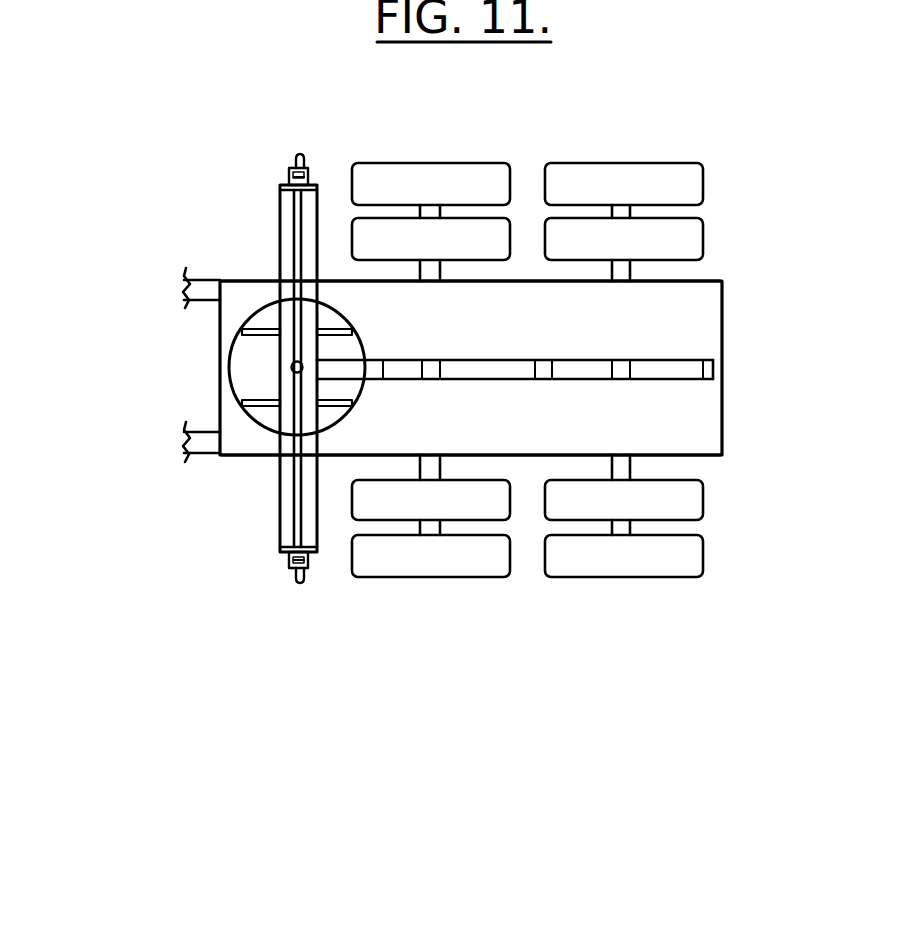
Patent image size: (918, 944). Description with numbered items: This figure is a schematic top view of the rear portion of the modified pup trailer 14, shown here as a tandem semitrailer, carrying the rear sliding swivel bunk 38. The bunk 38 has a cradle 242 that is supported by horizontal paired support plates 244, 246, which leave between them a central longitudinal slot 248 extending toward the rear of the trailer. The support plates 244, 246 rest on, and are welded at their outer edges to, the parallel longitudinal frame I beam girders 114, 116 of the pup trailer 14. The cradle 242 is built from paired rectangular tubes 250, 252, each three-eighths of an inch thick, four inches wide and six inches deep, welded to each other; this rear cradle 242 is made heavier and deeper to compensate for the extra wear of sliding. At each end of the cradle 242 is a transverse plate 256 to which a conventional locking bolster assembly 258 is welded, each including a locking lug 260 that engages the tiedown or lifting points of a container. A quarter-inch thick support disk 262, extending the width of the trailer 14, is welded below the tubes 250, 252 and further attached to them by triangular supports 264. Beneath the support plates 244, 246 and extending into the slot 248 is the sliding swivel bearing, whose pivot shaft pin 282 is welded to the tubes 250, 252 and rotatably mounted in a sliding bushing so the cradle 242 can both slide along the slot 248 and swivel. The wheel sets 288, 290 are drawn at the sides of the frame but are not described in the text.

The pup trailer 14 is at (498, 127).
The rear sliding swivel bunk 38 is at (207, 339).
The longitudinal frame I beam girder 114 is at (213, 280).
The longitudinal frame I beam girder 116 is at (212, 455).
The cradle 242 is at (280, 355).
The support plate 244 is at (695, 315).
The support plate 246 is at (695, 420).
The central longitudinal slot 248 is at (692, 366).
The rectangular tube 250 is at (282, 513).
The rectangular tube 252 is at (308, 527).
The transverse plate 256 is at (283, 186).
The locking bolster assembly 258 is at (294, 158).
The locking lug 260 is at (290, 172).
The support disk 262 is at (253, 378).
The triangular support 264 is at (236, 332).
The pivot shaft pin 282 is at (305, 365).
The front wheel set 288 is at (440, 463).
The rear wheel set 290 is at (630, 463).